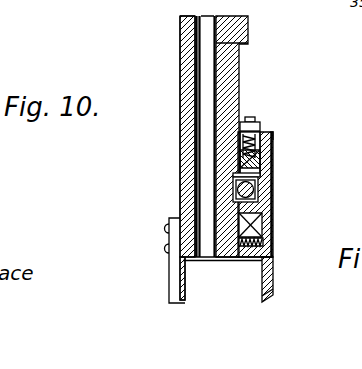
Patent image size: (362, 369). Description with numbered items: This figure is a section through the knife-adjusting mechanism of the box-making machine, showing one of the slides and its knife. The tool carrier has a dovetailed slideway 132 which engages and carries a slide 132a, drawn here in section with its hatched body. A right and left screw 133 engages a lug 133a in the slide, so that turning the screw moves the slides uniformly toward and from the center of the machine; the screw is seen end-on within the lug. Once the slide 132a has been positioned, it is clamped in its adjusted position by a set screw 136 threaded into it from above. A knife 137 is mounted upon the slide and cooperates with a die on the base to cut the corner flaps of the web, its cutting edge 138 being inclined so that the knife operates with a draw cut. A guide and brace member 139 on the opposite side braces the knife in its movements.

The dovetailed slideway 132 is at (274, 155).
The slide 132a is at (274, 133).
The right and left screw 133 is at (274, 197).
The lug 133a is at (274, 170).
The set screw 136 is at (261, 124).
The knife 137 is at (274, 263).
The cutting edge 138 is at (272, 309).
The guide and brace member 139 is at (169, 272).